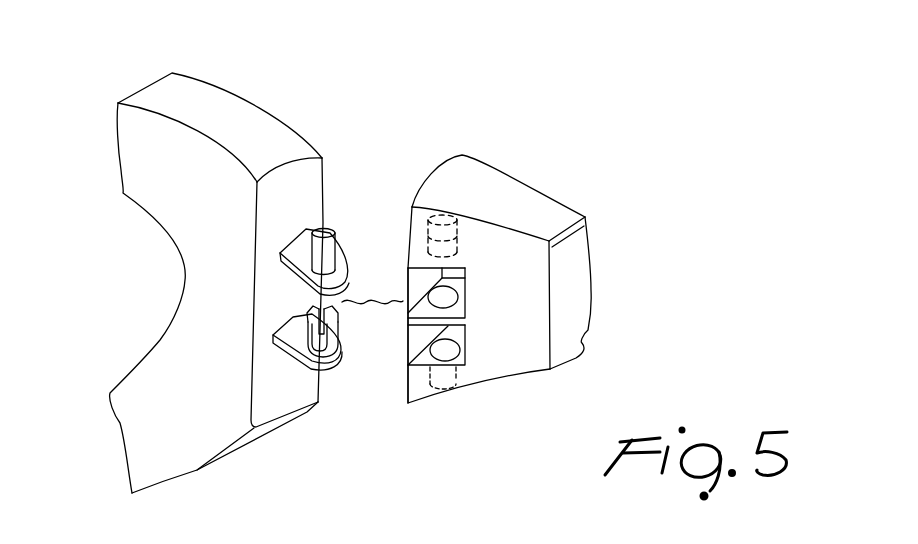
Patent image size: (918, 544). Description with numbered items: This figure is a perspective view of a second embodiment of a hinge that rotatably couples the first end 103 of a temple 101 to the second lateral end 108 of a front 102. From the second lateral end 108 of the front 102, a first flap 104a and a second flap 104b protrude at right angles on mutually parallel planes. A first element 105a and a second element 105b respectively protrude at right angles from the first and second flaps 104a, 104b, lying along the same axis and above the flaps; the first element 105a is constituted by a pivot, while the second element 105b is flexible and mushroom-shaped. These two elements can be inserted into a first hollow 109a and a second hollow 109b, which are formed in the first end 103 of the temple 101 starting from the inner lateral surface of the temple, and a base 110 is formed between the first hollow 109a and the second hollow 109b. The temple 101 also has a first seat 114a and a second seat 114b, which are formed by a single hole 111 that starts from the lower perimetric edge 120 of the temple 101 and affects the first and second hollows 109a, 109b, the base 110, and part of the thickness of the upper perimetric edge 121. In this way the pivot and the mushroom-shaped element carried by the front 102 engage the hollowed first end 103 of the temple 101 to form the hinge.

The temple 101 is at (510, 255).
The front 102 is at (222, 121).
The first end 103 is at (435, 167).
The first flap 104a is at (344, 266).
The second flap 104b is at (330, 368).
The first element 105a is at (315, 250).
The second element 105b is at (302, 327).
The second lateral end 108 is at (300, 187).
The first hollow 109a is at (466, 288).
The second hollow 109b is at (466, 336).
The base 110 is at (405, 315).
The single hole 111 is at (436, 384).
The first seat 114a is at (446, 216).
The second seat 114b is at (452, 318).
The lower perimetric edge 120 is at (485, 380).
The upper perimetric edge 121 is at (520, 207).